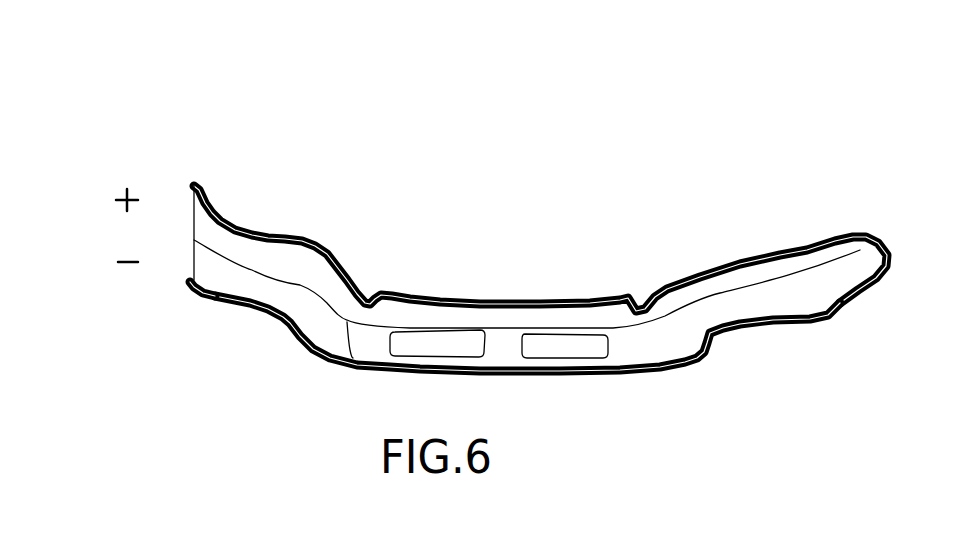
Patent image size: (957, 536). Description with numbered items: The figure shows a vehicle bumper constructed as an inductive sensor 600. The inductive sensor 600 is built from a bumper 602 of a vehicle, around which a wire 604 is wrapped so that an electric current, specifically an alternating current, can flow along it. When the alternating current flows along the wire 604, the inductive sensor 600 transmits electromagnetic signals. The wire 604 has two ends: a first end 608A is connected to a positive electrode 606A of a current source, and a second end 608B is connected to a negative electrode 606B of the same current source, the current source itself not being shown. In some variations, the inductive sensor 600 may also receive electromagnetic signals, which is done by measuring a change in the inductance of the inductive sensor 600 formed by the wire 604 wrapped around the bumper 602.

The inductive sensor 600 is at (682, 58).
The bumper 602 is at (324, 326).
The wire 604 is at (255, 212).
The positive electrode 606A is at (117, 188).
The negative electrode 606B is at (126, 268).
The first end 608A is at (199, 183).
The second end 608B is at (189, 266).